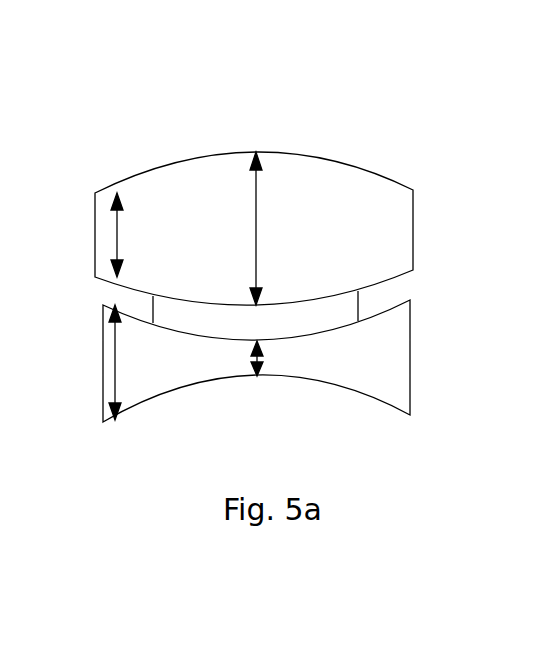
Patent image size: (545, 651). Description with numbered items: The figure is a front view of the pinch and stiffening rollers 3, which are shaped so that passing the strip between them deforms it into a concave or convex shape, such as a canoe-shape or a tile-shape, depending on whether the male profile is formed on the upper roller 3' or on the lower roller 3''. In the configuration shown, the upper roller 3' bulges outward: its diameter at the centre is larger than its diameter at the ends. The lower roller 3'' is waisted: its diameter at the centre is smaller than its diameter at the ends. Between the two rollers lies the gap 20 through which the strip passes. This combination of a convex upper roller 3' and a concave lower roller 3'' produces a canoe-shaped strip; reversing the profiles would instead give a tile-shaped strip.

The pinch and stiffening rollers 3 is at (299, 246).
The upper roller 3' is at (281, 202).
The lower roller 3'' is at (298, 385).
The gap / intermediate layer 20 is at (348, 310).